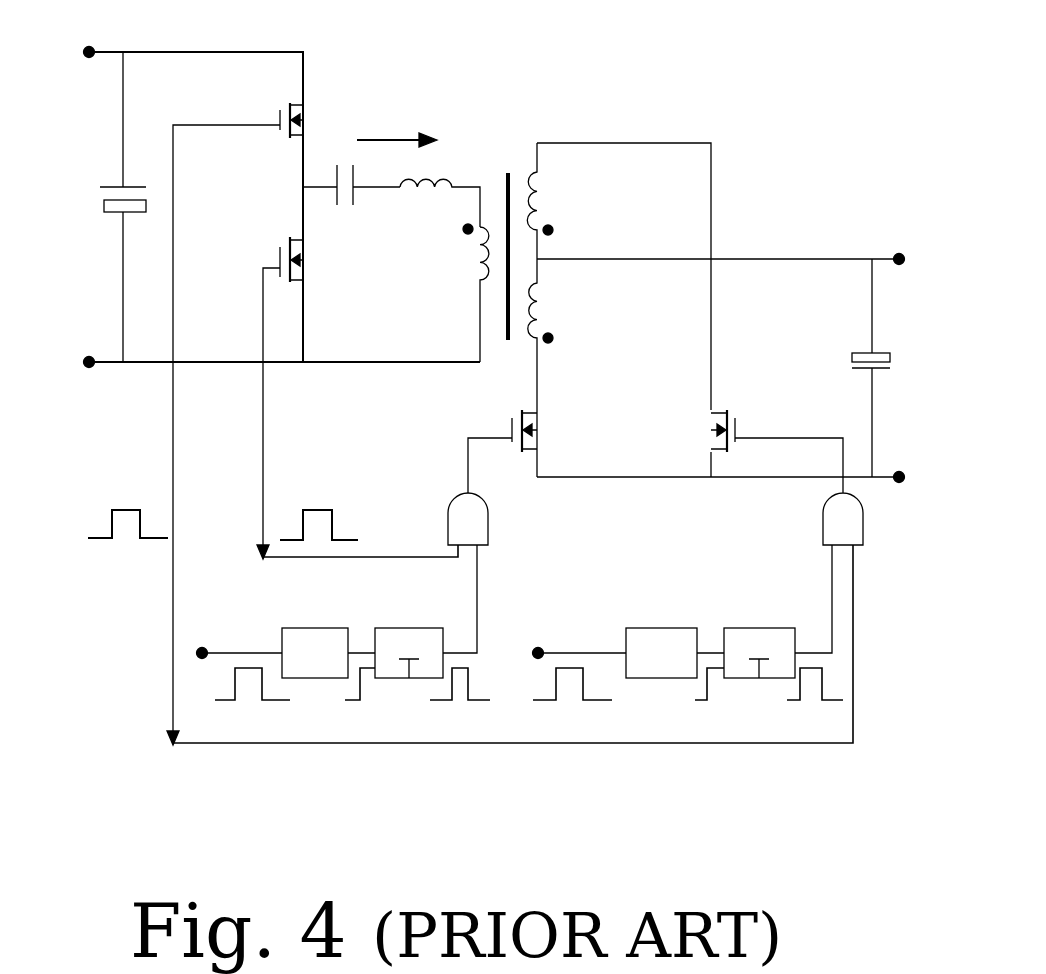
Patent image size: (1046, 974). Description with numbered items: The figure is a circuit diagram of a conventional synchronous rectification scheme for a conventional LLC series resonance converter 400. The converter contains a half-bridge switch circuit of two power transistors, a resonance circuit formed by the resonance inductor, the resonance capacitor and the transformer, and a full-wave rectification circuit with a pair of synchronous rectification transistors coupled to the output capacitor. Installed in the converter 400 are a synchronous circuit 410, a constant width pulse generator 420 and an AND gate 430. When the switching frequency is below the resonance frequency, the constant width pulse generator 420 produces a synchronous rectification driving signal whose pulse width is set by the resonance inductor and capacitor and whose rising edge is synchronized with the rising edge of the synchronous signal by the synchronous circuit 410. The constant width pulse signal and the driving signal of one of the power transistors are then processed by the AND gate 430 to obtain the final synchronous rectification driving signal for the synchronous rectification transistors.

The LLC series resonance converter 400 is at (510, 377).
The synchronous circuit 410 is at (312, 628).
The constant width pulse generator 420 is at (405, 628).
The AND gate 430 is at (488, 524).